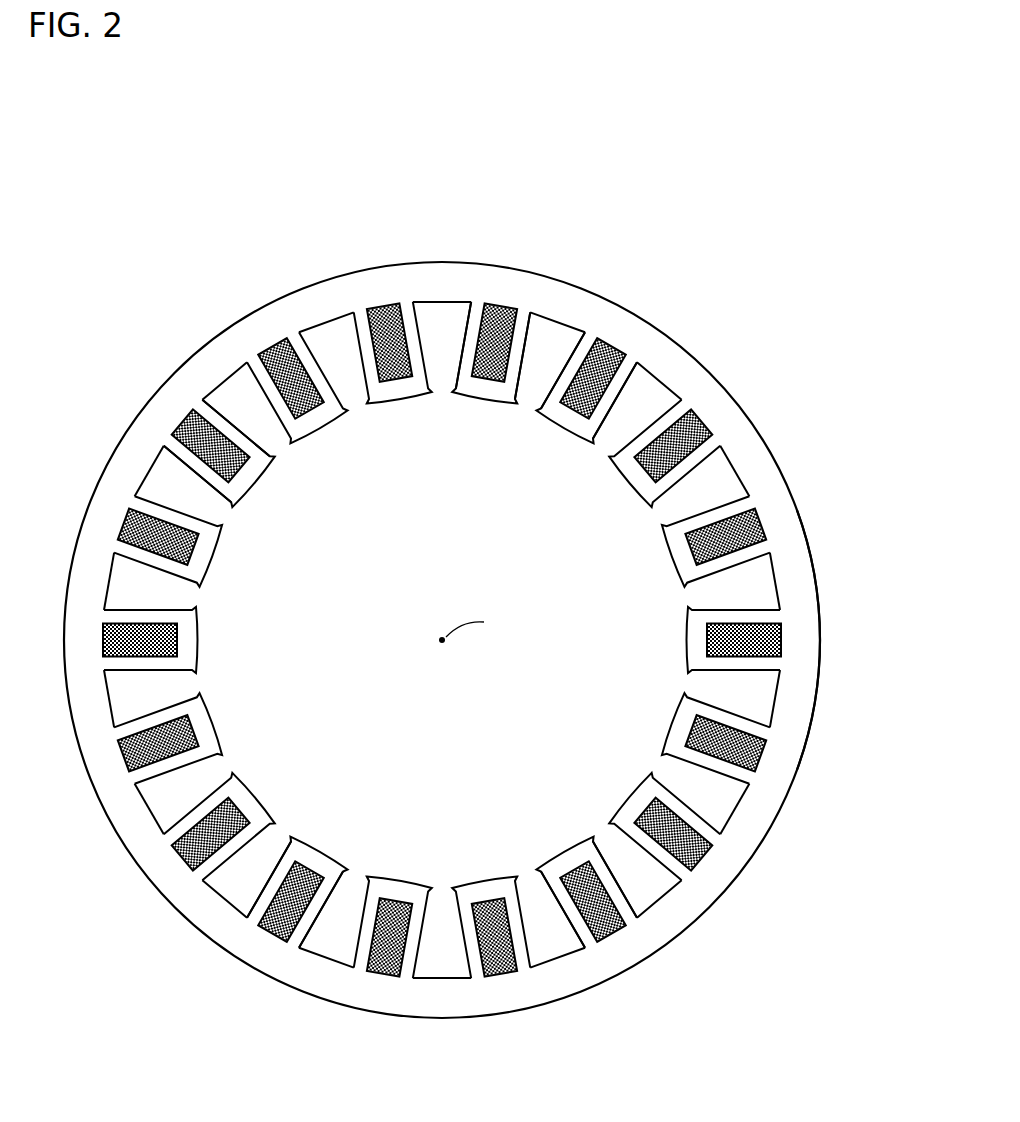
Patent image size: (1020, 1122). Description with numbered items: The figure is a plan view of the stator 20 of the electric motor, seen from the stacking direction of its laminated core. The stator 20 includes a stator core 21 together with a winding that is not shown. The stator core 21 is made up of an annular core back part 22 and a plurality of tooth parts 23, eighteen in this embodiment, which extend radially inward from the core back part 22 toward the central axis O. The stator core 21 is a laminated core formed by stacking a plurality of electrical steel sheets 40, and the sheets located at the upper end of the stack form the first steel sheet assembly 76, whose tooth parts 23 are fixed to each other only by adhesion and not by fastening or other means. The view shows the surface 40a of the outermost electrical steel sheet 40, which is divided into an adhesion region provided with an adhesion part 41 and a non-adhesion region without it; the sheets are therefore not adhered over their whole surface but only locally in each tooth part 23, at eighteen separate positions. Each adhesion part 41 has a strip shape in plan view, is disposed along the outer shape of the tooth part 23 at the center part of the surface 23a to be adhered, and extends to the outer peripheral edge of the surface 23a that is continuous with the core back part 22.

The stator 20 is at (744, 130).
The stator core 21 is at (666, 186).
The core back part 22 is at (632, 310).
The tooth part 23 is at (578, 353).
The surface to be adhered of the tooth part 23a is at (472, 345).
The electrical steel sheet 40 is at (215, 355).
The surface of the electrical steel sheet 40a is at (808, 655).
The adhesion part 41 is at (385, 308).
The first steel sheet assembly 76 is at (181, 197).